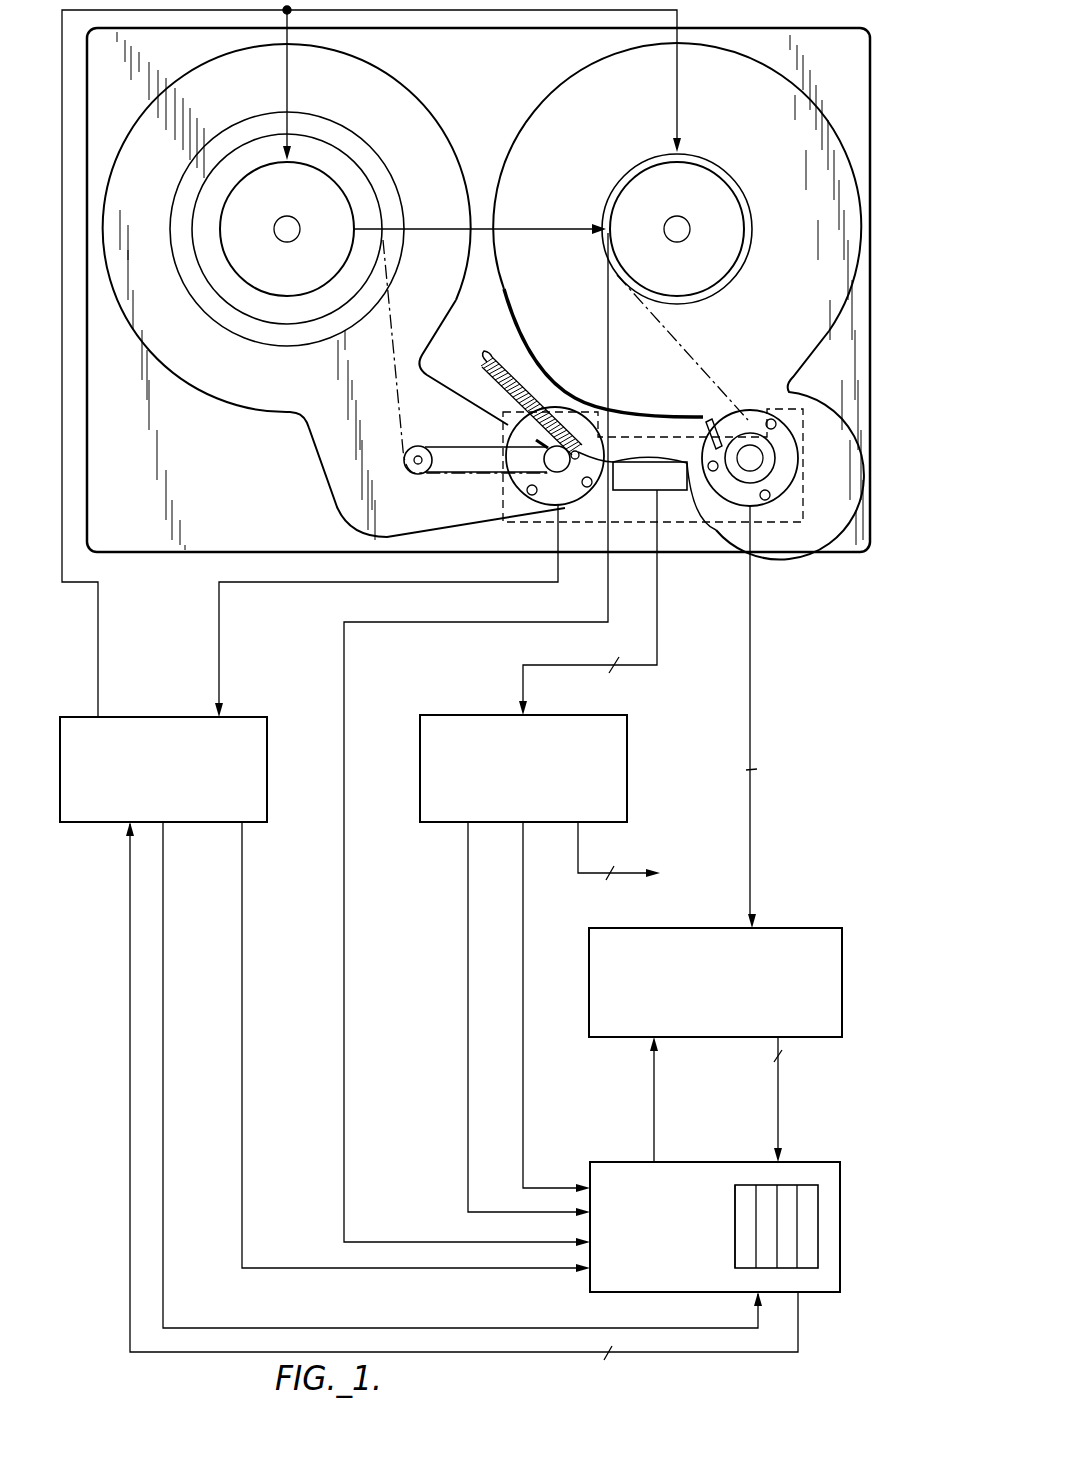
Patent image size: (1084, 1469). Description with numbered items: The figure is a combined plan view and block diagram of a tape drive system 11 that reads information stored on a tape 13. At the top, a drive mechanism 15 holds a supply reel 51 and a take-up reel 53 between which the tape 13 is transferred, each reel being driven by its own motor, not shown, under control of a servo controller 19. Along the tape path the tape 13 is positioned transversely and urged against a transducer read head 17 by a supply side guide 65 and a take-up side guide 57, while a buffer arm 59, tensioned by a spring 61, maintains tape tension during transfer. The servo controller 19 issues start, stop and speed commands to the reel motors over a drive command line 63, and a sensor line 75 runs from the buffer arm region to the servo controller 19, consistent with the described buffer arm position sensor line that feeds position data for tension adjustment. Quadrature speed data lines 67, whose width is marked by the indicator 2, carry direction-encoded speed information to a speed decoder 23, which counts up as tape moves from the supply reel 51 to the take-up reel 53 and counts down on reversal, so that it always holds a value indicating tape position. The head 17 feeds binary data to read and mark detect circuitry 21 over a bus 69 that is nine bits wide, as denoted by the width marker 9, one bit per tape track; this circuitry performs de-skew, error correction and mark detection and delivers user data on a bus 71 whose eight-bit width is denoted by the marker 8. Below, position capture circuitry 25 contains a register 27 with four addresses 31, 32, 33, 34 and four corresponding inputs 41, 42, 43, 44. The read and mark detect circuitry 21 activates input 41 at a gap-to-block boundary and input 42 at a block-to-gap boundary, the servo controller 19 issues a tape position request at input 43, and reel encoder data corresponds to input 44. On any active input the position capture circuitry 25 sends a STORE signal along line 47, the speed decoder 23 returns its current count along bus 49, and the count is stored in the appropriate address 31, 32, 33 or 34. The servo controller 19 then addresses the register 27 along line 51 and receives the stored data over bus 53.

The tape drive system 11 is at (892, 102).
The drive mechanism 15 is at (876, 199).
The take-up side guide 57 is at (873, 368).
The supply reel 51 is at (313, 193).
The take-up reel 53 is at (693, 190).
The tape 13 is at (706, 368).
The spring 61 is at (483, 378).
The buffer arm 59 is at (405, 466).
The supply side guide 65 is at (553, 461).
The transducer read head 17 is at (674, 483).
The drive command line 63 is at (98, 650).
The tension signal line 75 is at (219, 650).
The bus 69 is at (657, 650).
The bus width indicator 9 is at (609, 679).
The quadrature speed data lines 67 is at (751, 650).
The bus width indicator 2 is at (760, 771).
The servo controller 19 is at (258, 718).
The read and mark detect circuitry 21 is at (620, 716).
The user data bus 71 is at (578, 845).
The bus width indicator 8 is at (689, 1126).
The speed decoder 23 is at (820, 928).
The STORE signal line 47 is at (655, 1080).
The position count bus 49 is at (779, 1080).
The position capture circuitry 25 is at (840, 1264).
The register 27 is at (789, 1188).
The register address 31 is at (742, 1192).
The register address 32 is at (763, 1192).
The register address 33 is at (788, 1192).
The register address 34 is at (810, 1192).
The position capture input 41 is at (524, 1082).
The position capture input 42 is at (466, 1082).
The position capture input 43 is at (243, 1082).
The position capture input 44 is at (345, 1112).